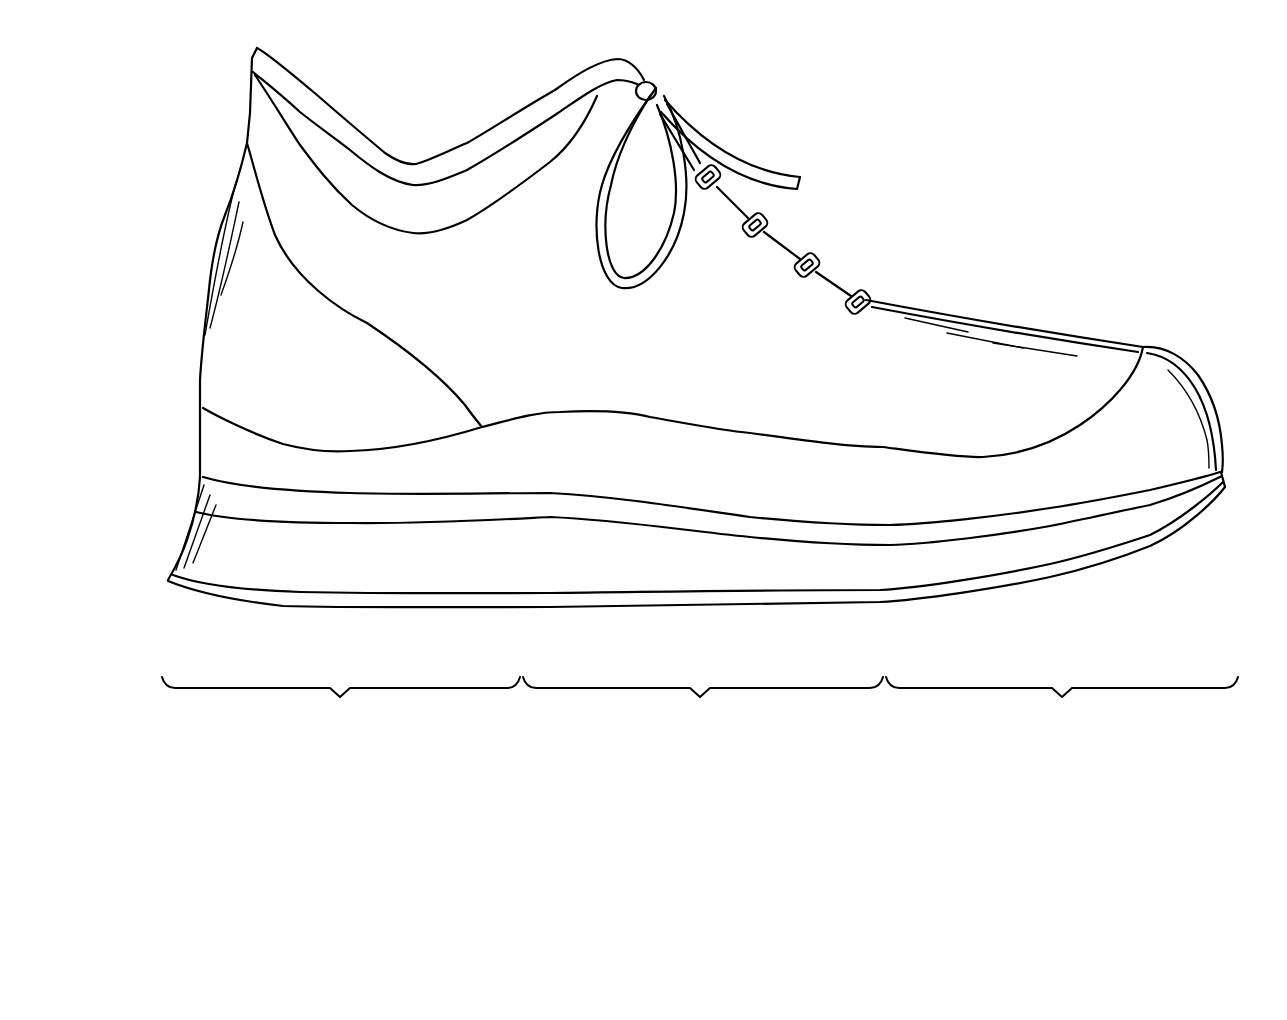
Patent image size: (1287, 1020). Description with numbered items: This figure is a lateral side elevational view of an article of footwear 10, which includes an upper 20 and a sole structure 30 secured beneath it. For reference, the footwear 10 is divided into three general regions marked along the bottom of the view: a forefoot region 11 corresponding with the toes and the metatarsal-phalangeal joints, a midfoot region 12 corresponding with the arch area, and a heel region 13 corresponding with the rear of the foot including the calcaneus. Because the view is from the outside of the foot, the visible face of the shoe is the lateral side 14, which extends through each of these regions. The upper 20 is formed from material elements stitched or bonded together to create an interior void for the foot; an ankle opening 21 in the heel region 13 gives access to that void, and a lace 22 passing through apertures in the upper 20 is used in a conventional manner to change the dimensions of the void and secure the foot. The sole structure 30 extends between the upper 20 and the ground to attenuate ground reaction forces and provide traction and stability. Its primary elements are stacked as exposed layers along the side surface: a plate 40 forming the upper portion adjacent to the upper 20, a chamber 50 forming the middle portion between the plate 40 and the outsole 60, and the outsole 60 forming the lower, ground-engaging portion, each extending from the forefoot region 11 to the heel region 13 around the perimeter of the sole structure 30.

The article of footwear 10 is at (927, 174).
The forefoot region 11 is at (1062, 708).
The midfoot region 12 is at (703, 708).
The heel region 13 is at (341, 708).
The lateral side 14 is at (613, 349).
The upper 20 is at (1054, 332).
The ankle opening 21 is at (417, 165).
The lace 22 is at (757, 168).
The sole structure 30 is at (930, 601).
The plate 40 is at (383, 513).
The chamber 50 is at (332, 582).
The outsole 60 is at (277, 608).